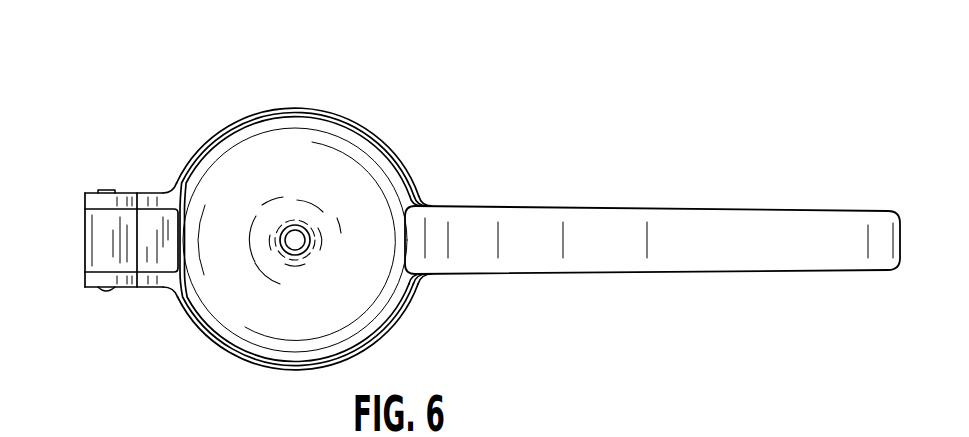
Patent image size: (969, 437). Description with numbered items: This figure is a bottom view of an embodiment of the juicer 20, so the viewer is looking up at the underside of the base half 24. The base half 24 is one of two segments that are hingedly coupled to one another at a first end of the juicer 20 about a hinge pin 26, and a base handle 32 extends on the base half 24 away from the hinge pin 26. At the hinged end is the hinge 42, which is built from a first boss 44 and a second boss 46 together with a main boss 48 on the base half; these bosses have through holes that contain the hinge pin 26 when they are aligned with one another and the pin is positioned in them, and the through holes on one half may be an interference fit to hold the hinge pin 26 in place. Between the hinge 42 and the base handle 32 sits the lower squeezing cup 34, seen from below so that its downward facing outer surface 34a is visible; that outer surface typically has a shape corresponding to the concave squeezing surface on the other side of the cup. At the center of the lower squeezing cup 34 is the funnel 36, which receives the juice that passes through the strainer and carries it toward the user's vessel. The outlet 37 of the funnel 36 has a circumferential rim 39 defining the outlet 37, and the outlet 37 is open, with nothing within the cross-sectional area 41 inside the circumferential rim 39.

The juicer 20 is at (517, 145).
The base half 24 is at (588, 287).
The hinge pin 26 is at (104, 292).
The base handle 32 is at (585, 226).
The lower squeezing cup 34 is at (363, 130).
The downward facing outer surface 34a is at (355, 193).
The funnel 36 is at (284, 228).
The outlet 37 is at (301, 218).
The circumferential rim 39 is at (305, 228).
The cross-sectional area 41 is at (295, 240).
The hinge 42 is at (109, 170).
The first boss 44 is at (96, 278).
The second boss 46 is at (92, 194).
The main boss 48 is at (98, 245).